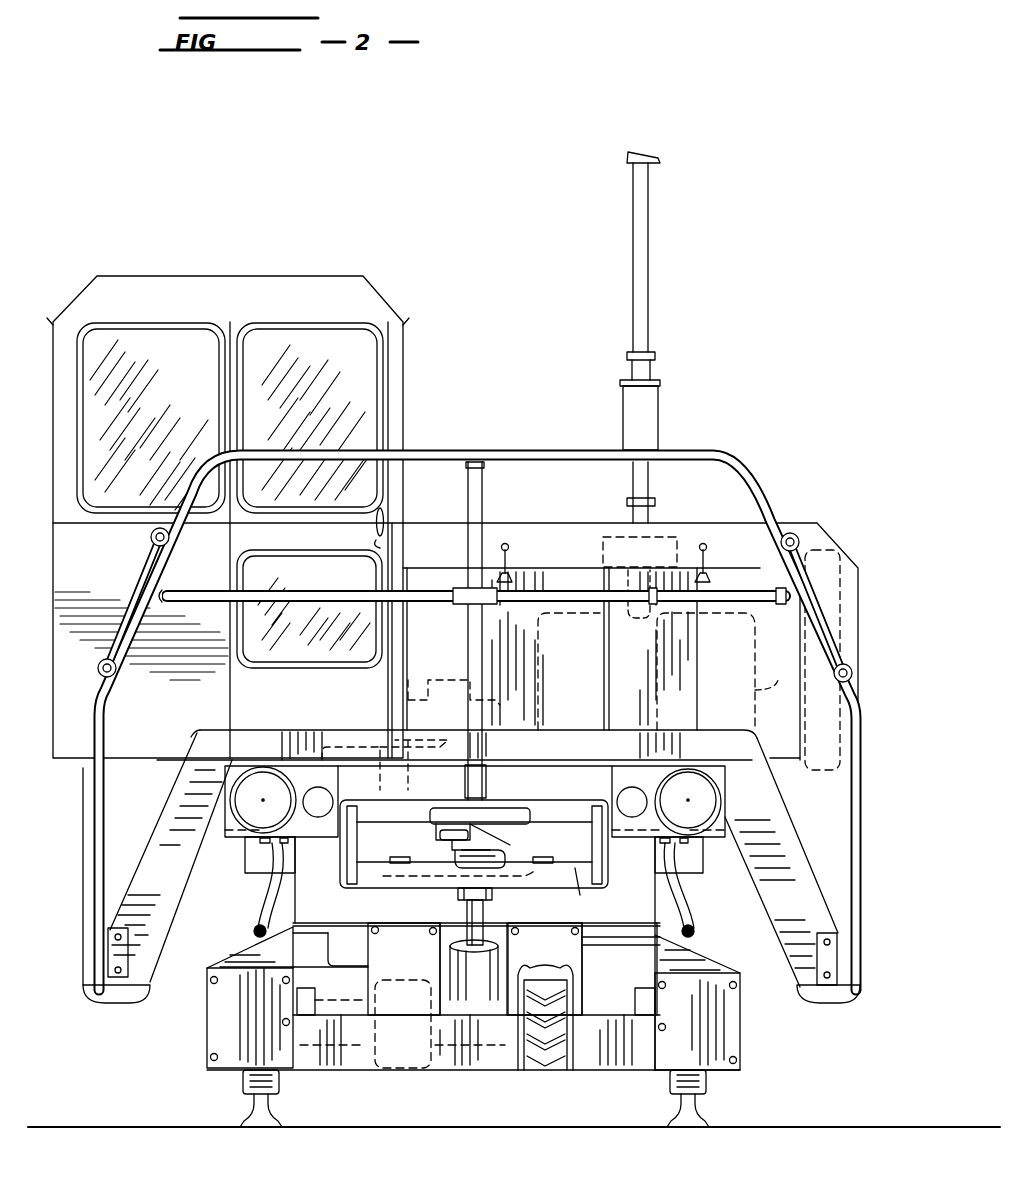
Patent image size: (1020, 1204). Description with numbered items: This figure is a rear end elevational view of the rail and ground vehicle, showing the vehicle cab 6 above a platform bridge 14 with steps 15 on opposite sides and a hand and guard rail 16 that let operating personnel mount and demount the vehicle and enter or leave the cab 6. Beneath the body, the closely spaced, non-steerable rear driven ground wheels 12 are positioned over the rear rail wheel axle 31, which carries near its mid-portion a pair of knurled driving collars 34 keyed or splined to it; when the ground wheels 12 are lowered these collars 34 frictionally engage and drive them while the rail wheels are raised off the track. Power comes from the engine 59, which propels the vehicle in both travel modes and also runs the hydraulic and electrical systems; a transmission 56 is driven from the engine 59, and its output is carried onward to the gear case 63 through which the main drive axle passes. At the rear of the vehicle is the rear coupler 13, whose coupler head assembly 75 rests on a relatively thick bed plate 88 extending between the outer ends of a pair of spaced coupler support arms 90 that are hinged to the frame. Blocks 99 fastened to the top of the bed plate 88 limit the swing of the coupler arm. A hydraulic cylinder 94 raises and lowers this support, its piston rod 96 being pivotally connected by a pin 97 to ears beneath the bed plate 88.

The vehicle cab 6 is at (408, 373).
The rear driven ground wheels 12 is at (280, 1087).
The rear coupler 13 is at (387, 795).
The platform bridge 14 is at (736, 736).
The steps 15 is at (172, 898).
The hand and guard rail 16 is at (715, 450).
The rail wheel axle 31 is at (533, 1032).
The knurled driving collars 34 is at (380, 1060).
The transmission 56 is at (450, 698).
The engine 59 is at (773, 671).
The gear case 63 is at (350, 745).
The coupler head assembly 75 is at (460, 804).
The bed plate 88 is at (489, 894).
The coupler support arms 90 is at (596, 872).
The hydraulic cylinder 94 is at (492, 960).
The piston rod 96 is at (484, 912).
The pin 97 is at (458, 895).
The blocks 99 is at (404, 853).